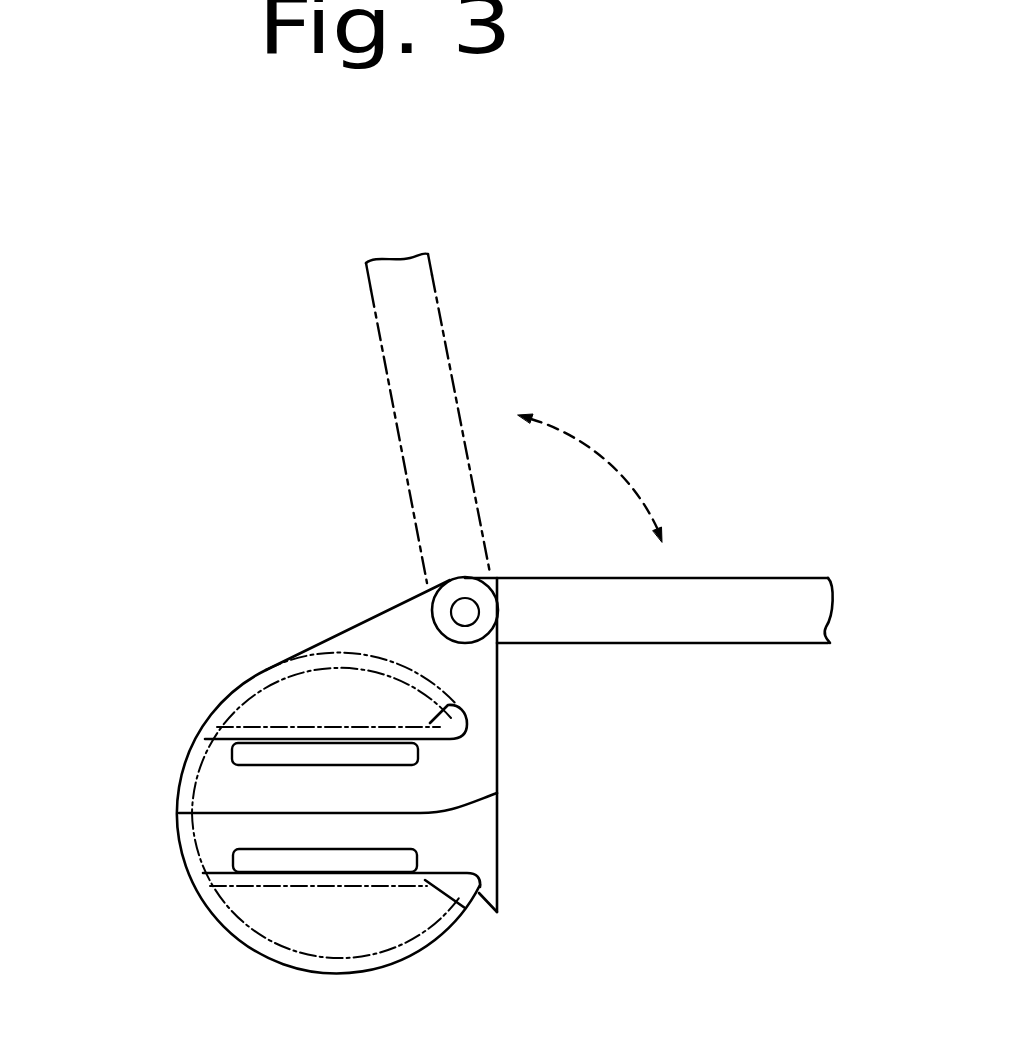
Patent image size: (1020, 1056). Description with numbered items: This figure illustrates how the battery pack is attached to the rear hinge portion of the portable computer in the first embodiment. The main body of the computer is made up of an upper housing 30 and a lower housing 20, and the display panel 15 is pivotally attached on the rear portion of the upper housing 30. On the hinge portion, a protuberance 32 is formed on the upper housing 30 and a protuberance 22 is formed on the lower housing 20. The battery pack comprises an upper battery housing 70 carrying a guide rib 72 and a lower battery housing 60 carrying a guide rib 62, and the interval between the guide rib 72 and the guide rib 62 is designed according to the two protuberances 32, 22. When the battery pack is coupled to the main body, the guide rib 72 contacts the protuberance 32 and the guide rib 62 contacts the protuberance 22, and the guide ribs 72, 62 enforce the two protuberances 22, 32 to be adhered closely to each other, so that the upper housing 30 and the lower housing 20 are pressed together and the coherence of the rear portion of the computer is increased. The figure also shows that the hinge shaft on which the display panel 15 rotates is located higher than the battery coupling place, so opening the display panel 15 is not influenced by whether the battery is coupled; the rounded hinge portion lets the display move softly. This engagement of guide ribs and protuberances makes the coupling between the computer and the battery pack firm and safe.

The display panel 15 is at (735, 578).
The lower housing 20 is at (465, 835).
The protuberance 22 is at (265, 862).
The upper housing 30 is at (463, 767).
The protuberance 32 is at (263, 753).
The lower battery housing 60 is at (217, 910).
The guide rib 62 is at (497, 904).
The upper battery housing 70 is at (222, 707).
The guide rib 72 is at (457, 700).